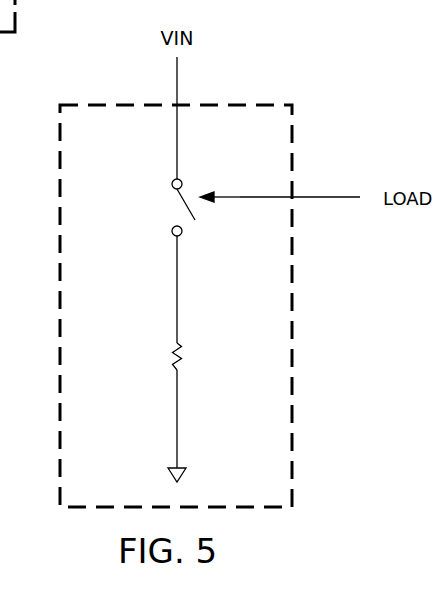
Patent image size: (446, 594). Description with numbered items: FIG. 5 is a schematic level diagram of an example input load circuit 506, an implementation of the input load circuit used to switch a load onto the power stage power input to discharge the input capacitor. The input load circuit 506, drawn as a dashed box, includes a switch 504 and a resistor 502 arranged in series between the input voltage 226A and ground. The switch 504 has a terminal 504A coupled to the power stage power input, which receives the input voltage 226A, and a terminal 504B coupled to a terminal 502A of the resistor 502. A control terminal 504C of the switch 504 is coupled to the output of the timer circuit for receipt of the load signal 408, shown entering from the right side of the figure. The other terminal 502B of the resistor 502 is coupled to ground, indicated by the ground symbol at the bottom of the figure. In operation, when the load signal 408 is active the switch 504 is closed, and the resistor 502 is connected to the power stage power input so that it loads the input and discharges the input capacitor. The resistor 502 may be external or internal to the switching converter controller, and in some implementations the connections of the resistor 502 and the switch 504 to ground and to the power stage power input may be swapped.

The VIN 226A is at (175, 82).
The input load circuit 506 is at (231, 105).
The switch 504 is at (177, 208).
The terminal 504A is at (172, 173).
The terminal 504B is at (182, 207).
The control terminal 504C is at (246, 168).
The load signal 408 is at (327, 195).
The resistor 502 is at (168, 355).
The terminal 502A is at (170, 332).
The terminal 502B is at (182, 385).